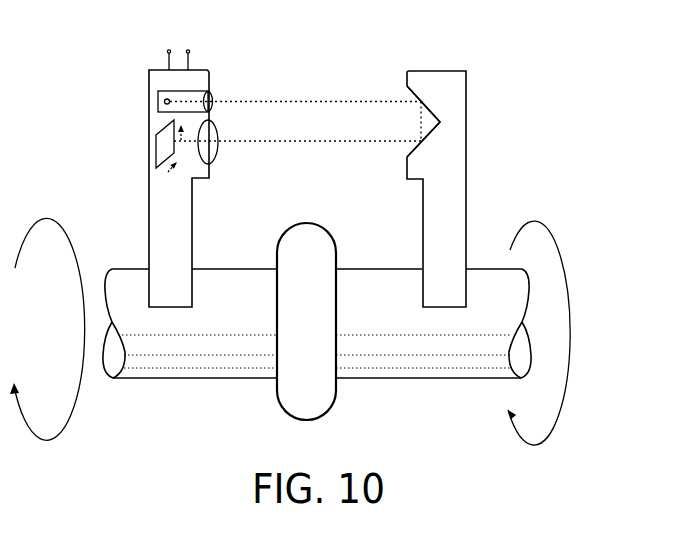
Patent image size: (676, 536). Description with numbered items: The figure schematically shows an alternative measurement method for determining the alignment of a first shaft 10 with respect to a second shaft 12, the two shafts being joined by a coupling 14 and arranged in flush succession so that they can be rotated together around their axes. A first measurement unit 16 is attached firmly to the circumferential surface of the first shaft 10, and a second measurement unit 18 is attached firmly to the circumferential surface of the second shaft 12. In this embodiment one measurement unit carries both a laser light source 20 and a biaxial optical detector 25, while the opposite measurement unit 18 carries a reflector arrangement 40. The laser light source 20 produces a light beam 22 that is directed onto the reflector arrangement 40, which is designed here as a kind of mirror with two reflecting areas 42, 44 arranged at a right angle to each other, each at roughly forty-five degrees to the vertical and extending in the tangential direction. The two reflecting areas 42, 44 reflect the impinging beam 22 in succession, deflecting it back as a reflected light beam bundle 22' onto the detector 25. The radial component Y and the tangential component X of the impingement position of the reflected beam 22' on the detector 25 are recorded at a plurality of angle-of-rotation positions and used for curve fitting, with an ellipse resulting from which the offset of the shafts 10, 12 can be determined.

The first shaft 10 is at (187, 360).
The second shaft 12 is at (430, 360).
The coupling 14 is at (285, 408).
The first measurement unit 16 is at (218, 64).
The second measurement unit 18 is at (471, 153).
The laser light source 20 is at (158, 101).
The light beam 22 is at (295, 81).
The reflected light beam bundle 22' is at (297, 173).
The biaxial optical detector 25 is at (160, 153).
The reflector arrangement 40 is at (471, 94).
The reflecting area 42 is at (430, 110).
The reflecting area 44 is at (413, 152).